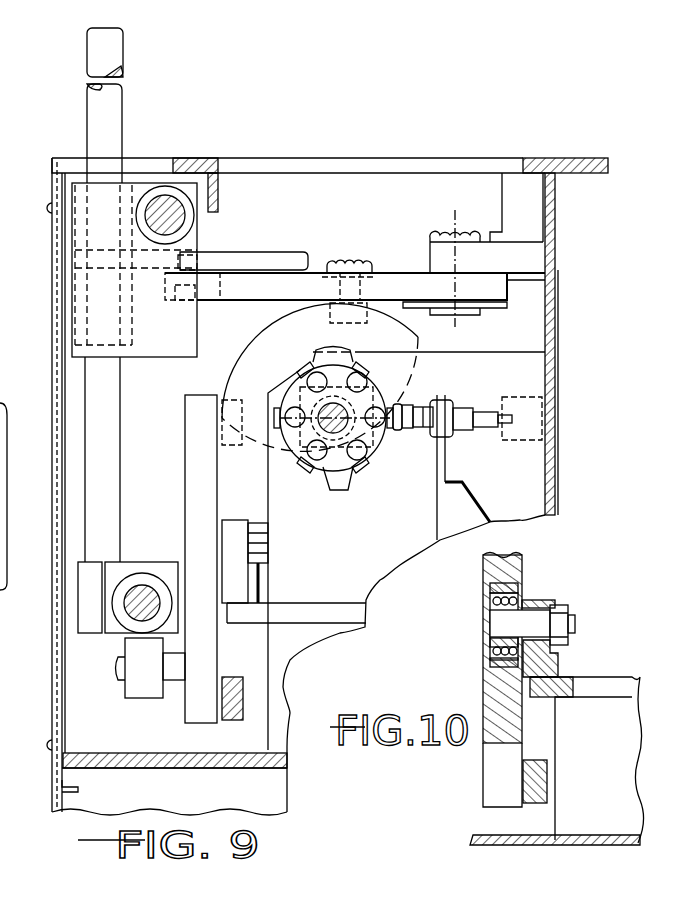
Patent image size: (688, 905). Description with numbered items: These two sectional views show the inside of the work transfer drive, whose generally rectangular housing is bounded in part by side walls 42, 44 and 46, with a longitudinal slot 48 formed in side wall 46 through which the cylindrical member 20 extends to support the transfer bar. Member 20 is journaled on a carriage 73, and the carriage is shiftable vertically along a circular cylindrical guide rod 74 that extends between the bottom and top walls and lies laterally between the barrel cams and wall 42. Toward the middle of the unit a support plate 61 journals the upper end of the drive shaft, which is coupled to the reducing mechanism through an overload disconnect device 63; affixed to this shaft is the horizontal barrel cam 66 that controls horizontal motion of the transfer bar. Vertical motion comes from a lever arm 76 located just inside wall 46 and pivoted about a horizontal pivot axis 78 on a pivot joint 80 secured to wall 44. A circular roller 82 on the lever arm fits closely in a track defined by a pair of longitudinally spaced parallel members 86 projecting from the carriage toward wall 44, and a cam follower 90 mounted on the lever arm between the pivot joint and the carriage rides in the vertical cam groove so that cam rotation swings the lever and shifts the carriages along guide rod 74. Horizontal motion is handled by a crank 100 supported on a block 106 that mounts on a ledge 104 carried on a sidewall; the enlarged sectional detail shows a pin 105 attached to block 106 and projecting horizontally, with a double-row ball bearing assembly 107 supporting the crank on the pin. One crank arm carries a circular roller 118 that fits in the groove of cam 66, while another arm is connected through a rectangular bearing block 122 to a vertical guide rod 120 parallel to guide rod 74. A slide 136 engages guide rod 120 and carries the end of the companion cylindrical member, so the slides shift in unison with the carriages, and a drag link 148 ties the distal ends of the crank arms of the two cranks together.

In FIG. 9, the cylindrical member 20 is at (120, 505).
In FIG. 9, the side wall 42 is at (55, 333).
In FIG. 9, the side wall 44 is at (560, 362).
In FIG. 9, the side wall 46 is at (547, 160).
In FIG. 9, the longitudinal slot 48 is at (140, 170).
In FIG. 9, the support plate 61 is at (467, 439).
In FIG. 9, the overload disconnect device 63 is at (388, 403).
In FIG. 9, the barrel cam 66 is at (314, 350).
In FIG. 9, the carriage 73 is at (178, 358).
In FIG. 9, the guide rod 74 is at (172, 212).
In FIG. 9, the lever arm 76 is at (410, 272).
In FIG. 9, the pivot axis 78 is at (456, 236).
In FIG. 9, the pivot joint 80 is at (428, 226).
In FIG. 9, the roller 82 is at (212, 262).
In FIG. 9, the parallel members 86 is at (272, 258).
In FIG. 9, the cam follower 90 is at (432, 352).
In FIG. 9, the crank 100 is at (180, 453).
In FIG. 10, the crank 100 is at (478, 668).
In FIG. 9, the ledge 104 is at (333, 603).
In FIG. 10, the ledge 104 is at (598, 697).
In FIG. 10, the pin 105 is at (515, 612).
In FIG. 9, the block 106 is at (247, 597).
In FIG. 10, the block 106 is at (562, 605).
In FIG. 10, the bearing assembly 107 is at (518, 585).
In FIG. 9, the roller 118 is at (248, 356).
In FIG. 9, the guide rod 120 is at (142, 605).
In FIG. 9, the bearing block 122 is at (114, 709).
In FIG. 9, the slide 136 is at (132, 562).
In FIG. 9, the drag link 148 is at (250, 692).
In FIG. 10, the drag link 148 is at (548, 786).